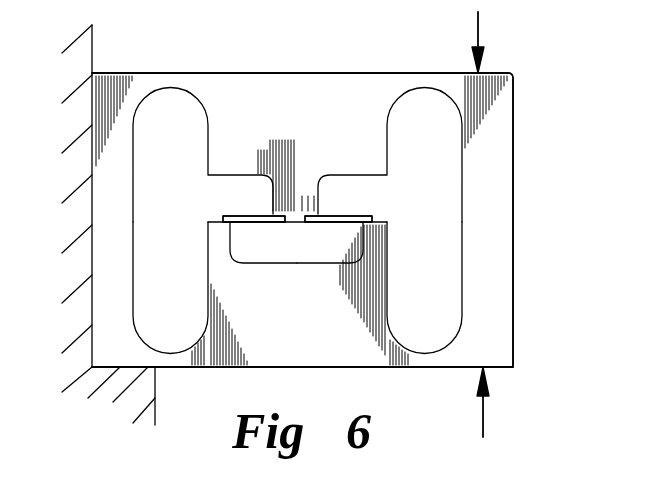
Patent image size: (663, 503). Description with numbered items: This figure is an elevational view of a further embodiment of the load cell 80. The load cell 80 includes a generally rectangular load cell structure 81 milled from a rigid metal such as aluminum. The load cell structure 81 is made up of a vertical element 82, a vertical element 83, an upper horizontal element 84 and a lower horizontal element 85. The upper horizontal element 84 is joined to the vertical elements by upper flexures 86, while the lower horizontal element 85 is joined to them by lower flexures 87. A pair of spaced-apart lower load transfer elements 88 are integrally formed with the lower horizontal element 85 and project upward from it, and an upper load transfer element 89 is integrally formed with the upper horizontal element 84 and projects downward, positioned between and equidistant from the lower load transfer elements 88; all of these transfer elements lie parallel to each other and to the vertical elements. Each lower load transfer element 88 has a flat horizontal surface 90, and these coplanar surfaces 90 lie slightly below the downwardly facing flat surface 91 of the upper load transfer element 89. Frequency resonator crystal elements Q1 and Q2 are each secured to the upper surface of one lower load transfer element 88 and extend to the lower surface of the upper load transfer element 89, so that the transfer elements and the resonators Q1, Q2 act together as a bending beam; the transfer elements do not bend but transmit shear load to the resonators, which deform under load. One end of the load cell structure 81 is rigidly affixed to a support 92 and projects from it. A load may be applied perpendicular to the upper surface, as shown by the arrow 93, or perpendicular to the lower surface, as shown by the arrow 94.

The load cell 80 is at (545, 78).
The load cell structure 81 is at (525, 132).
The vertical element 82 is at (100, 222).
The vertical element 83 is at (505, 181).
The upper horizontal element 84 is at (303, 73).
The lower horizontal element 85 is at (337, 367).
The upper flexures 86 is at (172, 84).
The lower flexures 87 is at (175, 365).
The lower load transfer elements 88 is at (214, 244).
The upper load transfer element 89 is at (304, 223).
The flat horizontal surface 90 is at (220, 215).
The downwardly facing flat surface 91 is at (300, 186).
The support 92 is at (92, 50).
The arrow 93 is at (478, 22).
The arrow 94 is at (483, 412).
The frequency resonator crystal element Q1 is at (245, 216).
The frequency resonator crystal element Q2 is at (345, 208).